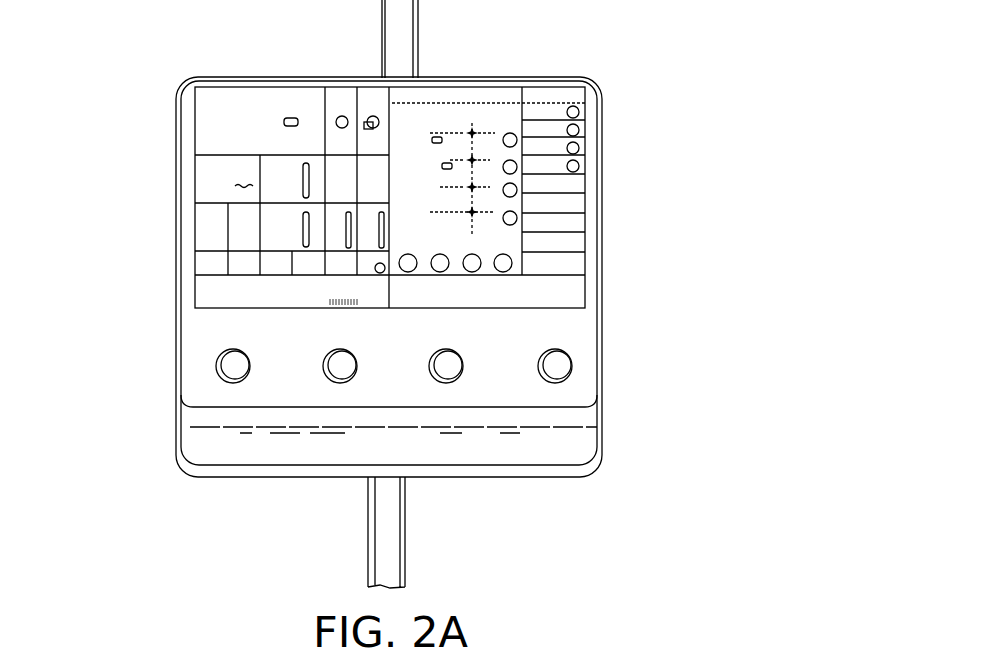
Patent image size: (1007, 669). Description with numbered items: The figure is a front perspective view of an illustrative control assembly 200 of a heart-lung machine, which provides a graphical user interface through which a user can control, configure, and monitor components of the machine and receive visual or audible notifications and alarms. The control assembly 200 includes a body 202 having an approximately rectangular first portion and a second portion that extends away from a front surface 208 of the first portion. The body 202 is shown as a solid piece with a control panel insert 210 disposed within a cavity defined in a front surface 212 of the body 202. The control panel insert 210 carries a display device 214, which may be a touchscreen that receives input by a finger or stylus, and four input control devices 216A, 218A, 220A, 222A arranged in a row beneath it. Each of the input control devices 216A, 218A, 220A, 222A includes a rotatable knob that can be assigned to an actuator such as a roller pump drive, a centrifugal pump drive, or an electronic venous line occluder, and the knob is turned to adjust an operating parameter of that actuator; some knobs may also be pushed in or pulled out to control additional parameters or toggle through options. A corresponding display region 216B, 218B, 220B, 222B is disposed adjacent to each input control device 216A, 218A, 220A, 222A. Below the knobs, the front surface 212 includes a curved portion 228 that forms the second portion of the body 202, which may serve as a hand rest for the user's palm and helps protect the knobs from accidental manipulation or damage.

The control assembly 200 is at (118, 46).
The body 202 is at (597, 76).
The front surface 208 is at (567, 323).
The control panel insert 210 is at (198, 350).
The front surface 212 is at (563, 433).
The display device 214 is at (580, 166).
The input control device 216A is at (232, 362).
The display region 216B is at (249, 309).
The input control device 218A is at (342, 362).
The display region 218B is at (365, 311).
The input control device 220A is at (450, 362).
The display region 220B is at (462, 300).
The input control device 222A is at (555, 362).
The display region 222B is at (580, 292).
The curved portion 228 is at (195, 438).